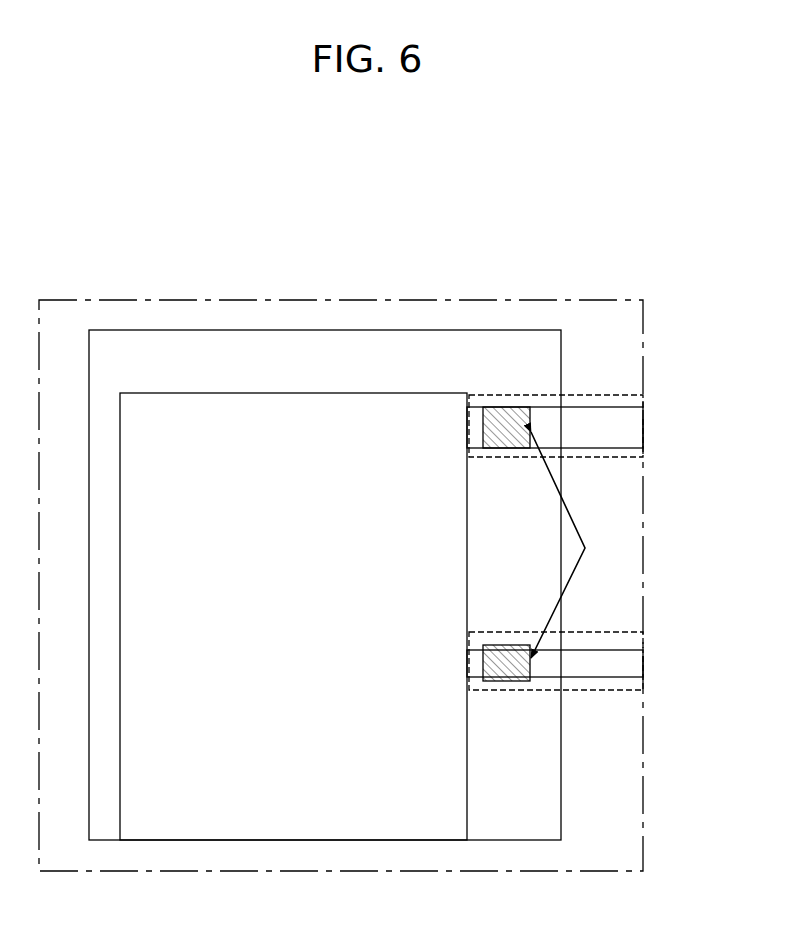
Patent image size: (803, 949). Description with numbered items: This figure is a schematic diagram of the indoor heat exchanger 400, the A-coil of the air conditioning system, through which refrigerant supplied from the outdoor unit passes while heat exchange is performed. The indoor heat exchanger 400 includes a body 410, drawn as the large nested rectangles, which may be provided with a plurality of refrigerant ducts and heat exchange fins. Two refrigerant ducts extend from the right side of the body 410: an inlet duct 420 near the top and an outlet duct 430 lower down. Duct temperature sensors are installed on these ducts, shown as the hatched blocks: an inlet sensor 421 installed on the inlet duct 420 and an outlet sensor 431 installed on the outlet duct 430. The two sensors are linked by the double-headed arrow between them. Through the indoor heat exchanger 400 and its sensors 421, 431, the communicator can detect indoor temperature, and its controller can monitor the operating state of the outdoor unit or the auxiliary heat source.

The indoor heat exchanger 400 is at (76, 212).
The body 410 is at (140, 343).
The inlet duct 420 is at (623, 428).
The inlet sensor 421 is at (505, 418).
The outlet duct 430 is at (623, 662).
The outlet sensor 431 is at (505, 667).